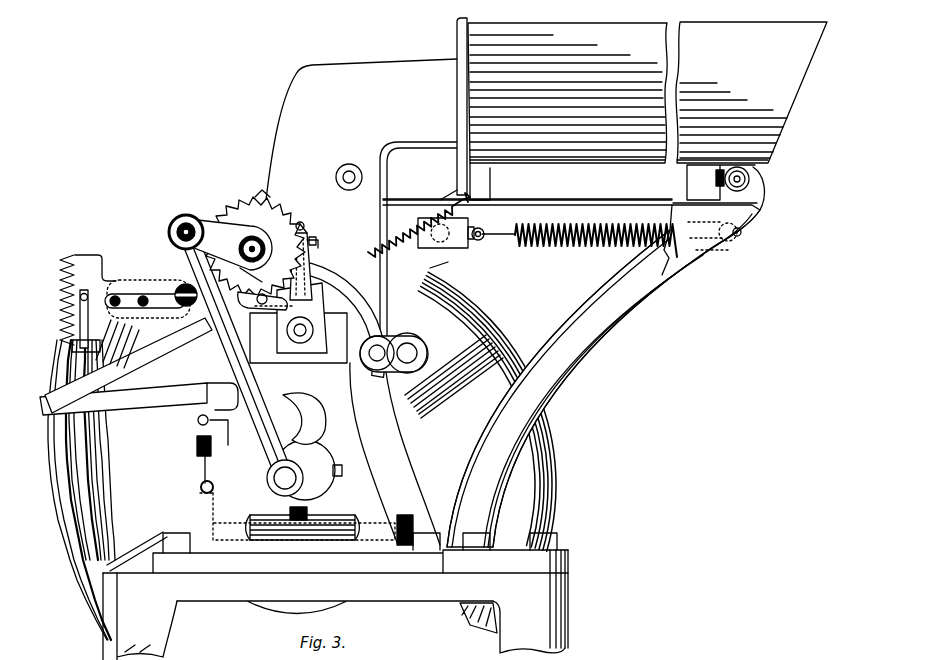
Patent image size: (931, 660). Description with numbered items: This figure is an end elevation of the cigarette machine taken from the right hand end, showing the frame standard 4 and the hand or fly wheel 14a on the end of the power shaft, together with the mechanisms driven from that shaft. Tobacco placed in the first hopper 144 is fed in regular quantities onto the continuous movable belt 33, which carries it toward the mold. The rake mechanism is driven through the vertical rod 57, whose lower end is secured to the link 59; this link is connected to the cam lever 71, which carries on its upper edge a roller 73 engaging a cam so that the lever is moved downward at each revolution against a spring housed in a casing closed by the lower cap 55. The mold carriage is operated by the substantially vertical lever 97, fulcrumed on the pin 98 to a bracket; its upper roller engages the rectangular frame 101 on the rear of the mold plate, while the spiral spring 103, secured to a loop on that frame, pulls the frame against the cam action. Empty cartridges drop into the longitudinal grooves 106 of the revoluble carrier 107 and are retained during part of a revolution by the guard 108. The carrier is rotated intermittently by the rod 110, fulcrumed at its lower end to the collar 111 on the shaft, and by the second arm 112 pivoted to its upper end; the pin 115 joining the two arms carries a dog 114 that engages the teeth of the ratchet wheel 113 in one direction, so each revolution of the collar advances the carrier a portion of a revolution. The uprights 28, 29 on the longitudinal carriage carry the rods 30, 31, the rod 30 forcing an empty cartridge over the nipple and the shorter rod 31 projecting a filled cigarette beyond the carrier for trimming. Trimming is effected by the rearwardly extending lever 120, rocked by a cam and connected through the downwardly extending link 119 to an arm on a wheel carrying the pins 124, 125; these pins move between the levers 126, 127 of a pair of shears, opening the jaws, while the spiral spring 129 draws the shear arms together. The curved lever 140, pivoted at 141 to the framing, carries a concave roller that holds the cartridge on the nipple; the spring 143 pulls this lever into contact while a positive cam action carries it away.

The standard 4 is at (297, 515).
The fly wheel 14a is at (507, 320).
The upright 28 is at (313, 300).
The upright 29 is at (304, 405).
The longitudinal rod 30 is at (299, 222).
The longitudinal rod 31 is at (260, 304).
The belt 33 is at (551, 203).
The lower cap 55 is at (197, 446).
The vertical rod 57 is at (203, 466).
The link 59 is at (203, 499).
The cam lever 71 is at (317, 533).
The roller 73 is at (288, 515).
The lever 97 is at (440, 270).
The pin 98 is at (414, 350).
The rectangular frame 101 is at (456, 231).
The spiral spring 103 is at (555, 246).
The longitudinal grooves 106 is at (263, 190).
The revoluble carrier 107 is at (247, 205).
The guard 108 is at (318, 232).
The rod 110 is at (272, 438).
The collar 111 is at (328, 472).
The second arm 112 is at (230, 244).
The ratchet wheel 113 is at (248, 281).
The dog 114 is at (205, 205).
The pin 115 is at (180, 215).
The link 119 is at (82, 362).
The lever 120 is at (147, 401).
The pin 124 is at (113, 277).
The pin 125 is at (153, 280).
The shear lever 126 is at (107, 243).
The shear lever 127 is at (134, 344).
The spiral spring 129 is at (65, 267).
The curved lever 140 is at (377, 320).
The pivot 141 is at (330, 330).
The spring 143 is at (372, 252).
The first hopper 144 is at (633, 109).